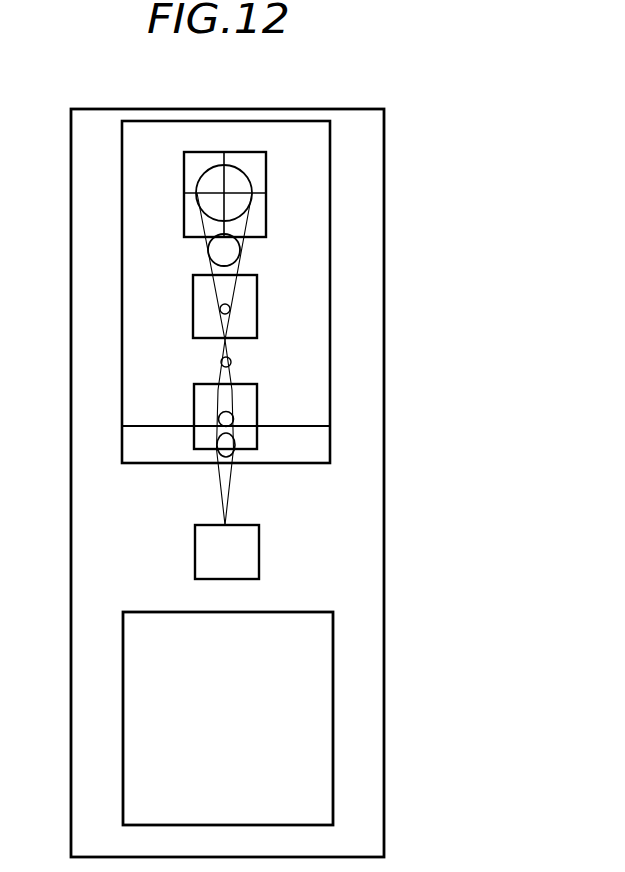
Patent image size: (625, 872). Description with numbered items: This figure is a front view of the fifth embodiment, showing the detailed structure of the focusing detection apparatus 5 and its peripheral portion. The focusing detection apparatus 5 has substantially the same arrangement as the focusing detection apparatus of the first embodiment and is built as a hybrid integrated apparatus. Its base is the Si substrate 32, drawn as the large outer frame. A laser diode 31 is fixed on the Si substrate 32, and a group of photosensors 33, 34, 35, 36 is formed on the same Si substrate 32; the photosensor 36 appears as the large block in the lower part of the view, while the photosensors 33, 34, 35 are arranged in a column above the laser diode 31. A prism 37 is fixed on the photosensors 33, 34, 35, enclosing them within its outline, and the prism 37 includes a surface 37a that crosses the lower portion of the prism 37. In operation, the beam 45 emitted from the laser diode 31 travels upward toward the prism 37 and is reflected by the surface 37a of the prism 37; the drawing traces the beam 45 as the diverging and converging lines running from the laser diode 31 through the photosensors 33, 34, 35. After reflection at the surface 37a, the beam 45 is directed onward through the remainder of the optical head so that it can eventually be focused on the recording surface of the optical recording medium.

The focusing detection apparatus 5 is at (287, 483).
The laser diode 31 is at (247, 557).
The Si substrate 32 is at (363, 636).
The photosensor 33 is at (250, 398).
The photosensor 34 is at (247, 292).
The photosensor 35 is at (255, 166).
The photosensor 36 is at (311, 703).
The prism 37 is at (310, 232).
The surface of the prism 37a is at (318, 442).
The beam 45 is at (233, 475).